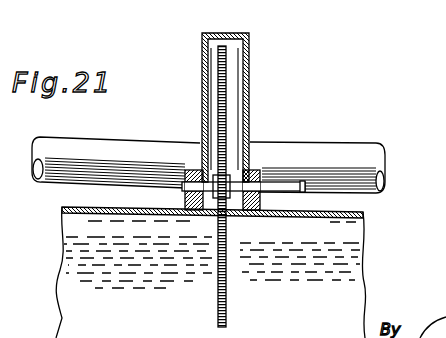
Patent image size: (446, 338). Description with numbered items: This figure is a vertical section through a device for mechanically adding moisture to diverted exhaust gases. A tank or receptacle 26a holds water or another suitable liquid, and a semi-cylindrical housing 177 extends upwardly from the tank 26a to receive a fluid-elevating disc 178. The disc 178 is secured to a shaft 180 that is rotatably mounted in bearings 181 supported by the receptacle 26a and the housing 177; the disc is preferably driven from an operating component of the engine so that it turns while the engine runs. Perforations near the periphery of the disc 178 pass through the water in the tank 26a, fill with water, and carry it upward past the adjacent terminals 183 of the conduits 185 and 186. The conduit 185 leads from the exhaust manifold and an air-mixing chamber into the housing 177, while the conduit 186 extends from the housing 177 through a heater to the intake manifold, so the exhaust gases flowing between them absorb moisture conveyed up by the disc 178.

The semi-cylindrical housing 177 is at (250, 60).
The fluid-elevating disc 178 is at (218, 92).
The terminals 183 is at (245, 110).
The bearings 181 is at (192, 167).
The shaft 180 is at (285, 187).
The conduit 185 is at (78, 143).
The conduit 186 is at (370, 153).
The tank or receptacle 26a is at (357, 228).